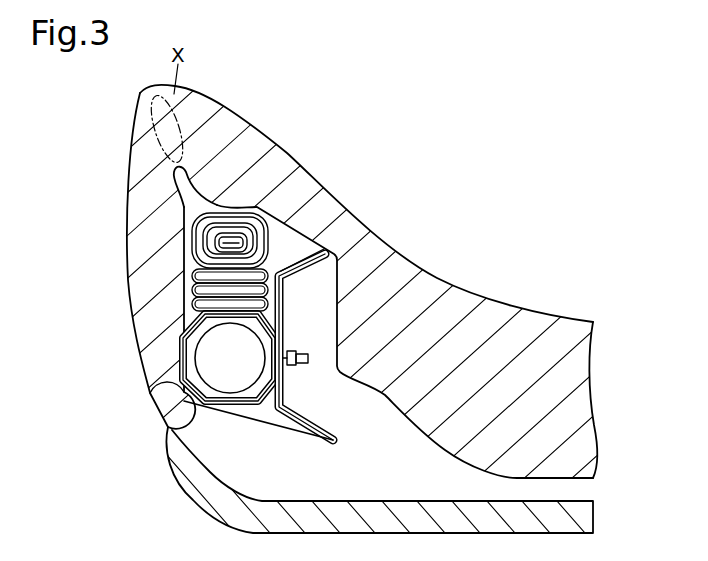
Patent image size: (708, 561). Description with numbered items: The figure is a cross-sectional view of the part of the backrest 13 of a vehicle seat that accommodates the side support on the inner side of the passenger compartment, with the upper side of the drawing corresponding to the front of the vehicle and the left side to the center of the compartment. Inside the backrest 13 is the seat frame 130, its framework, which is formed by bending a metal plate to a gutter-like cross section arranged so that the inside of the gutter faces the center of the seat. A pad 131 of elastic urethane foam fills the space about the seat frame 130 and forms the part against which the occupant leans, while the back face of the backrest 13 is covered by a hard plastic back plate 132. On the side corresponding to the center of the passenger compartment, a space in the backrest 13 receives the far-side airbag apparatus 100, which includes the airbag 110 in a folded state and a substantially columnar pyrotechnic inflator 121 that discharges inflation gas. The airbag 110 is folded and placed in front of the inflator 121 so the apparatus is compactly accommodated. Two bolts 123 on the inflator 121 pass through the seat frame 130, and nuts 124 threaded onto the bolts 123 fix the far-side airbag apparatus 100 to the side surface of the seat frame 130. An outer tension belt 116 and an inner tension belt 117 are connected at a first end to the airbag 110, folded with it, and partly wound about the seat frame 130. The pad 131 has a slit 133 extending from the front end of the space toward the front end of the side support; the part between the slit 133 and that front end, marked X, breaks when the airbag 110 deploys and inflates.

The backrest 13 is at (438, 277).
The pad 131 is at (597, 427).
The back plate 132 is at (596, 520).
The slit 133 is at (178, 190).
The far-side airbag apparatus 100 is at (174, 354).
The airbag 110 is at (192, 240).
The inflator 121 is at (185, 396).
The seat frame 130 is at (279, 412).
The inner tension belt 117 is at (303, 262).
The outer tension belt 116 is at (224, 411).
The nut 124 is at (300, 351).
The bolt 123 is at (303, 365).